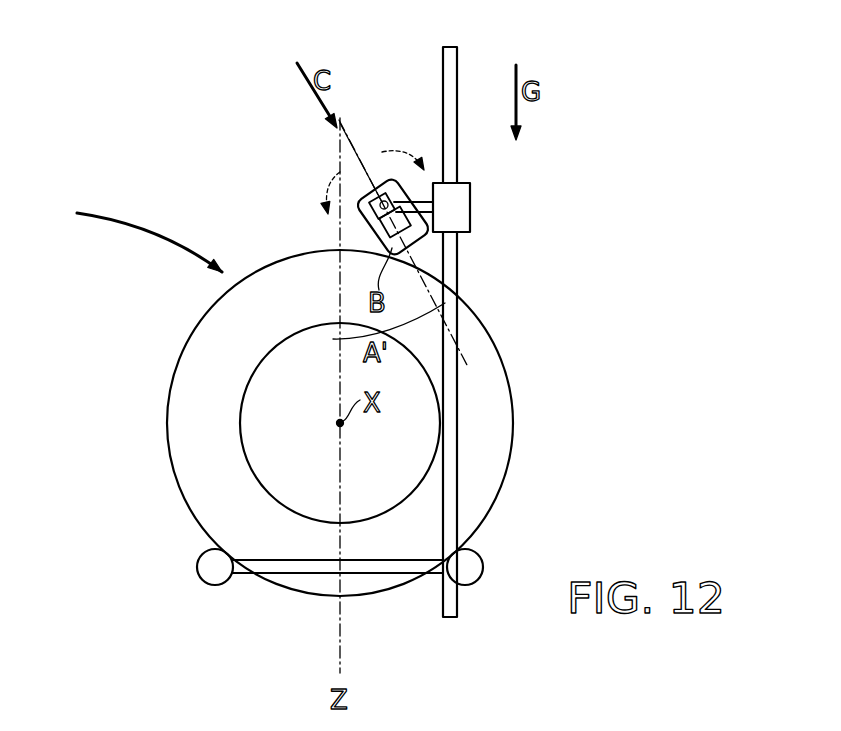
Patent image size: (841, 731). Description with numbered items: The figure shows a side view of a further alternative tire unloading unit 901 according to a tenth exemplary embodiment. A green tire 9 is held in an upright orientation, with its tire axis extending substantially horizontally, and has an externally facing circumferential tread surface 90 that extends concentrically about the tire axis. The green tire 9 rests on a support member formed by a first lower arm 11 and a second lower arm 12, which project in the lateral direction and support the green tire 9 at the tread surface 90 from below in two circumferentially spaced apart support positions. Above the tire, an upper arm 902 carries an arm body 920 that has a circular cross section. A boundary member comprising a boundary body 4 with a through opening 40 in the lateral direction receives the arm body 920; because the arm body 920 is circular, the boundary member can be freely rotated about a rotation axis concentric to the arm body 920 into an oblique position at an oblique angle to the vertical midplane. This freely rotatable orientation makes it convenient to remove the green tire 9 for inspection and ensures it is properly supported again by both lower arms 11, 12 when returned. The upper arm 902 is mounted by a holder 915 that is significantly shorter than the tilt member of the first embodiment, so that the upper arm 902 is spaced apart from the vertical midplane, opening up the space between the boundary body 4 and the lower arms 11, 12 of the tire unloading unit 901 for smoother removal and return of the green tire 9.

The further alternative tire unloading unit 901 is at (110, 77).
The upper arm 902 is at (340, 180).
The arm body 920 is at (383, 200).
The holder 915 is at (437, 195).
The through opening 40 is at (416, 215).
The boundary body 4 is at (410, 236).
The circumferential tread surface 90 is at (208, 313).
The green tire 9 is at (195, 407).
The first lower arm 11 is at (215, 567).
The second lower arm 12 is at (460, 567).